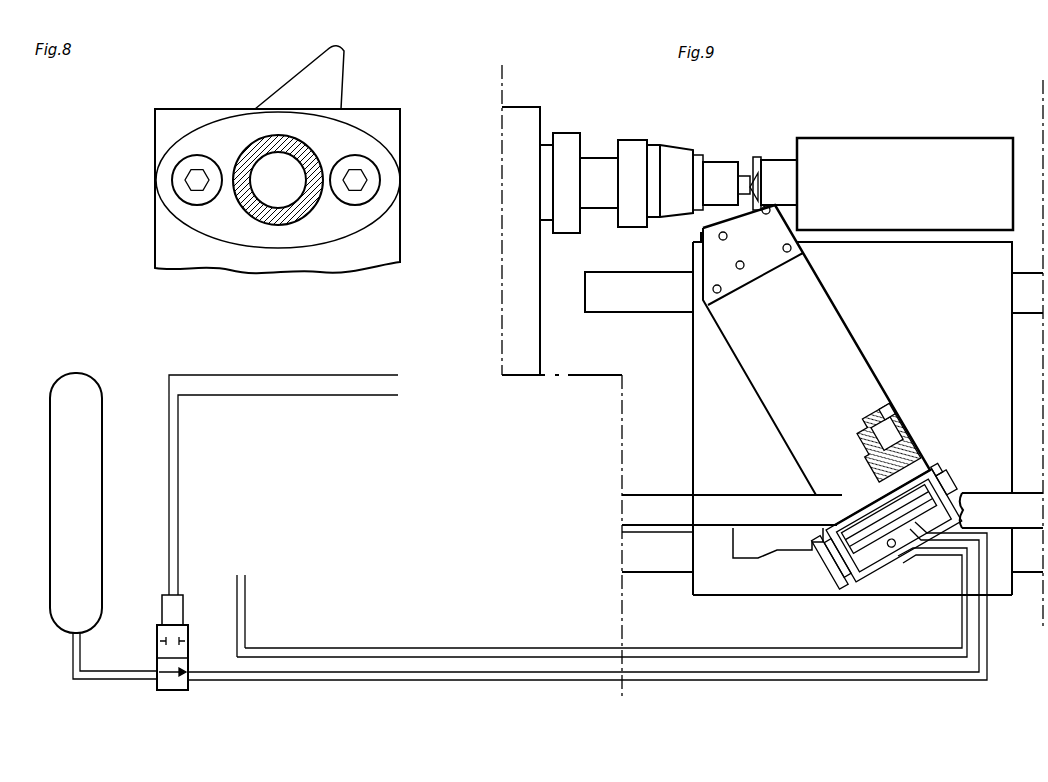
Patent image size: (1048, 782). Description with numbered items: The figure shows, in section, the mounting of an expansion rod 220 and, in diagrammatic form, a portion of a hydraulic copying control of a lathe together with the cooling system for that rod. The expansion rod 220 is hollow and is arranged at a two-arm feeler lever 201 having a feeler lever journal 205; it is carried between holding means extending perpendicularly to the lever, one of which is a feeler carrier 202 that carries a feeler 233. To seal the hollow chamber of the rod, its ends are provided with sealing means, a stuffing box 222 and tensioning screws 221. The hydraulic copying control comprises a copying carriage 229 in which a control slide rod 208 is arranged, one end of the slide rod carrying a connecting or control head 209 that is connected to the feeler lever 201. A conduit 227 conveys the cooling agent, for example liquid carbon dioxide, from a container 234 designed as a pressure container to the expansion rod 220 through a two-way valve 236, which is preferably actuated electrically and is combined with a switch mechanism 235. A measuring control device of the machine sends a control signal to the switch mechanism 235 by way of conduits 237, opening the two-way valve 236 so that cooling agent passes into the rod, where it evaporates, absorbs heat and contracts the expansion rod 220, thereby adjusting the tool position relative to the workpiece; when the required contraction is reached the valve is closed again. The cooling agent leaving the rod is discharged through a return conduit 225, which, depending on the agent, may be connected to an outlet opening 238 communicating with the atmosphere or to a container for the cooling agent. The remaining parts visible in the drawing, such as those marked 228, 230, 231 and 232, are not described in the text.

In FIG. 9, the feeler lever 201 is at (872, 540).
In FIG. 8, the feeler carrier 202 is at (315, 262).
In FIG. 9, the feeler lever journal 205 is at (893, 547).
In FIG. 9, the control slide rod 208 is at (928, 463).
In FIG. 9, the control head 209 is at (927, 486).
In FIG. 8, the expansion rod 220 is at (318, 160).
In FIG. 9, the expansion rod 220 is at (892, 513).
In FIG. 8, the tensioning screws 221 is at (200, 158).
In FIG. 8, the stuffing box 222 is at (203, 210).
In FIG. 9, the return conduit 225 is at (748, 652).
In FIG. 9, the conduit 227 is at (812, 676).
In FIG. 9, the arm 228 is at (618, 366).
In FIG. 9, the copying carriage 229 is at (833, 394).
In FIG. 9, the bore 230 is at (893, 405).
In FIG. 9, the piston 231 is at (888, 432).
In FIG. 9, the cylinder 232 is at (912, 433).
In FIG. 8, the feeler 233 is at (325, 70).
In FIG. 9, the feeler 233 is at (828, 558).
In FIG. 9, the container 234 is at (77, 525).
In FIG. 9, the switch mechanism 235 is at (167, 607).
In FIG. 9, the two-way valve 236 is at (157, 655).
In FIG. 9, the conduits 237 is at (178, 526).
In FIG. 9, the outlet opening 238 is at (245, 580).